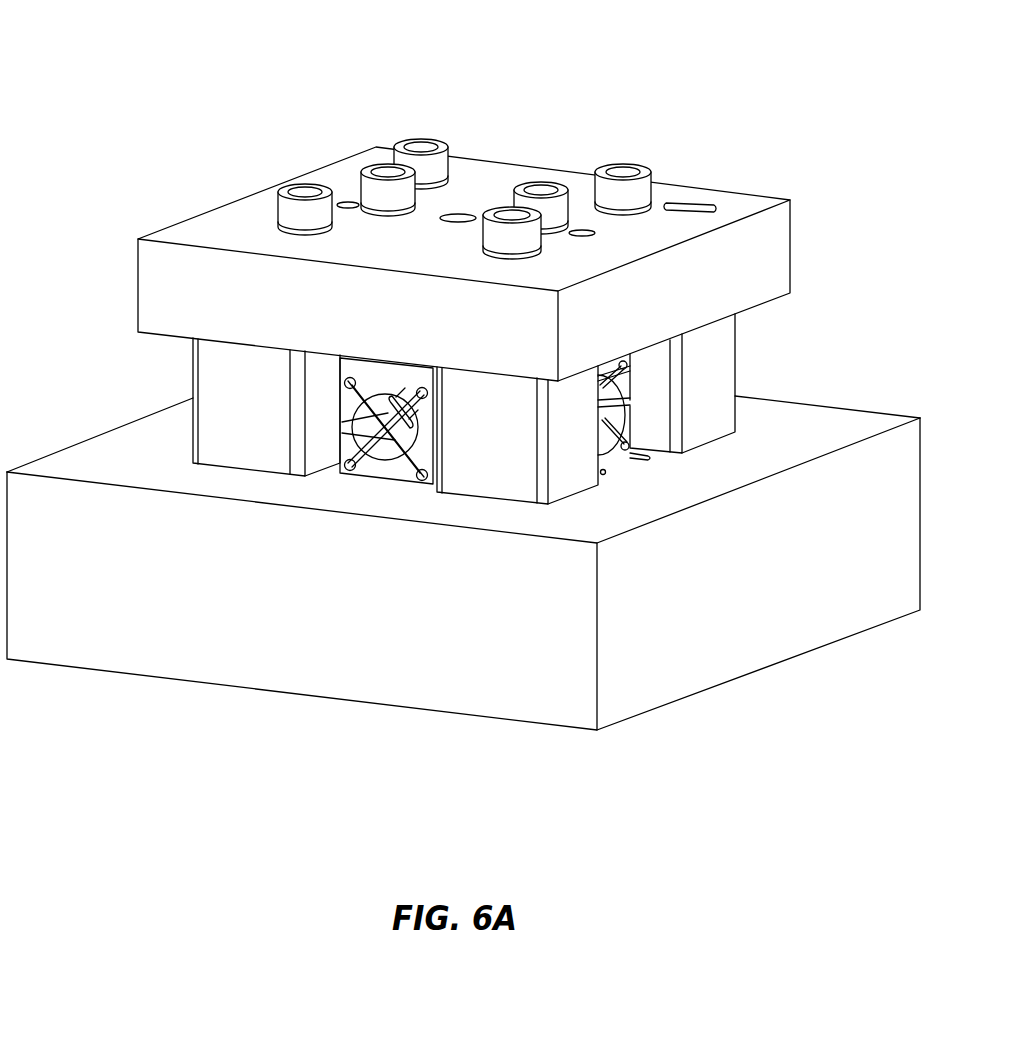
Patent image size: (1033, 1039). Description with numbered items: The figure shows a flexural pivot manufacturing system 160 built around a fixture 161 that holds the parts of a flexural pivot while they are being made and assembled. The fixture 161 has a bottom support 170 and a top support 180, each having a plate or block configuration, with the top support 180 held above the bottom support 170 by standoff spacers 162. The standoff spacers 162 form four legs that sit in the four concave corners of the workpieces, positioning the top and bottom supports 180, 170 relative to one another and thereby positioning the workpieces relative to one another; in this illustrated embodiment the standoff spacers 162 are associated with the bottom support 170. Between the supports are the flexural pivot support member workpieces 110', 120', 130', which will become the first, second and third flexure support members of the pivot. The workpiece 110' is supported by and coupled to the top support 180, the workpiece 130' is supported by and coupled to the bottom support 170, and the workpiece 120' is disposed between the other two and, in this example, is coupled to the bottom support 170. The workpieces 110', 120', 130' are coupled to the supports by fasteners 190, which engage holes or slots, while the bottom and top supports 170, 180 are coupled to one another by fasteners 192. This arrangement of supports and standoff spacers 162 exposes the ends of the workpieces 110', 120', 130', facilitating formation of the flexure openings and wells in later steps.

The flexural pivot manufacturing system 160 is at (316, 45).
The fixture 161 is at (115, 213).
The standoff spacers 162 is at (192, 389).
The bottom support 170 is at (842, 394).
The top support 180 is at (790, 174).
The fasteners 190 is at (541, 182).
The fasteners 192 is at (278, 203).
The flexural pivot support member workpiece 110' is at (716, 404).
The flexural pivot support member workpiece 120' is at (305, 561).
The flexural pivot support member workpiece 130' is at (380, 560).